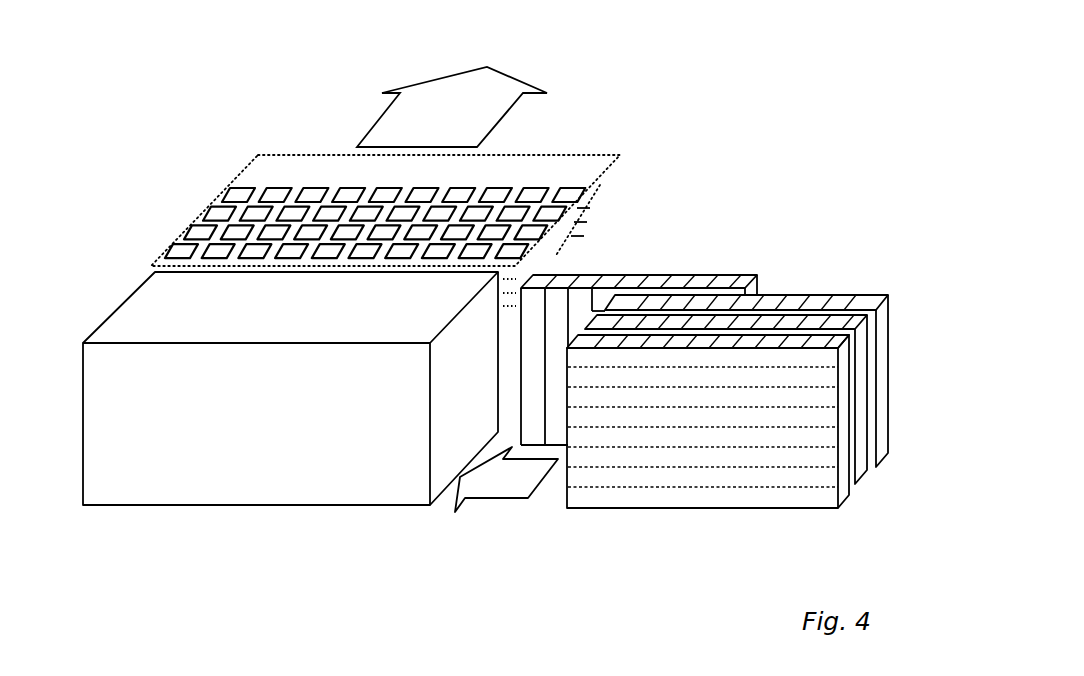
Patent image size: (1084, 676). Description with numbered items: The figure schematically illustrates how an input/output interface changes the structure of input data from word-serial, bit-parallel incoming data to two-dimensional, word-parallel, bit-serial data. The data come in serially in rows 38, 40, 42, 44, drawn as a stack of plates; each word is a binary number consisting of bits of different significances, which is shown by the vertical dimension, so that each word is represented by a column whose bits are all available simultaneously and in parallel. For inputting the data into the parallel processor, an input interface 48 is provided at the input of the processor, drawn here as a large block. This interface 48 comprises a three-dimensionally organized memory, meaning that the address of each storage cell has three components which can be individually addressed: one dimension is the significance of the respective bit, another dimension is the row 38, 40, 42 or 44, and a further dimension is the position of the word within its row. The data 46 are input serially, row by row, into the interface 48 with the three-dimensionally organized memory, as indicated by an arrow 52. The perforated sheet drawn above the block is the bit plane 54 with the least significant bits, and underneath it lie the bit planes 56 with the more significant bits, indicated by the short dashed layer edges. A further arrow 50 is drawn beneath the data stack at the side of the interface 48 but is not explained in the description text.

The row 38 is at (705, 283).
The row 40 is at (882, 318).
The row 42 is at (863, 388).
The row 44 is at (840, 487).
The data 46 is at (528, 310).
The input interface 48 is at (292, 487).
The flow direction arrow 50 is at (498, 484).
The arrow 52 is at (390, 122).
The bit plane with the least significant bits 54 is at (587, 165).
The bit planes with the more significant bits 56 is at (604, 205).